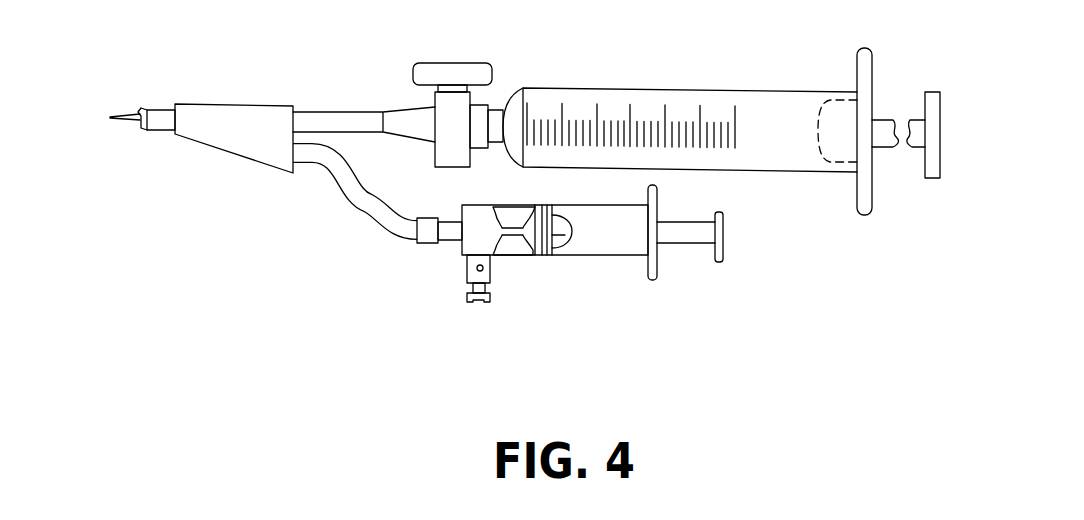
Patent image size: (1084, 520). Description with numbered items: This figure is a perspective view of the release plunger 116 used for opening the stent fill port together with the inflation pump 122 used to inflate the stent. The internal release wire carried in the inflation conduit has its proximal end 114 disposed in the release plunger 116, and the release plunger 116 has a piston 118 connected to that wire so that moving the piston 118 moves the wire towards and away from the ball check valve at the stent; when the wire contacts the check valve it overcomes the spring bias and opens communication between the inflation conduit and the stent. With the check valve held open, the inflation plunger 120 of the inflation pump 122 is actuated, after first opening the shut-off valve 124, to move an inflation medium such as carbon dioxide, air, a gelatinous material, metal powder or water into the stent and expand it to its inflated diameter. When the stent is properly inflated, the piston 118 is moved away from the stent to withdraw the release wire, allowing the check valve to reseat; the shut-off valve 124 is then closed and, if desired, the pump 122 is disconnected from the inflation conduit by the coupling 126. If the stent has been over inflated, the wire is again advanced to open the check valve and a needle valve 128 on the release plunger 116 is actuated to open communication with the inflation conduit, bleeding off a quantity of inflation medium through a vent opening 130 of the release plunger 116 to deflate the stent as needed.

The proximal end 114 is at (513, 233).
The release plunger 116 is at (630, 255).
The piston 118 is at (563, 235).
The inflation plunger 120 is at (900, 120).
The inflation pump 122 is at (718, 100).
The shut-off valve 124 is at (455, 74).
The coupling 126 is at (490, 115).
The needle valve 128 is at (475, 303).
The vent opening 130 is at (467, 267).